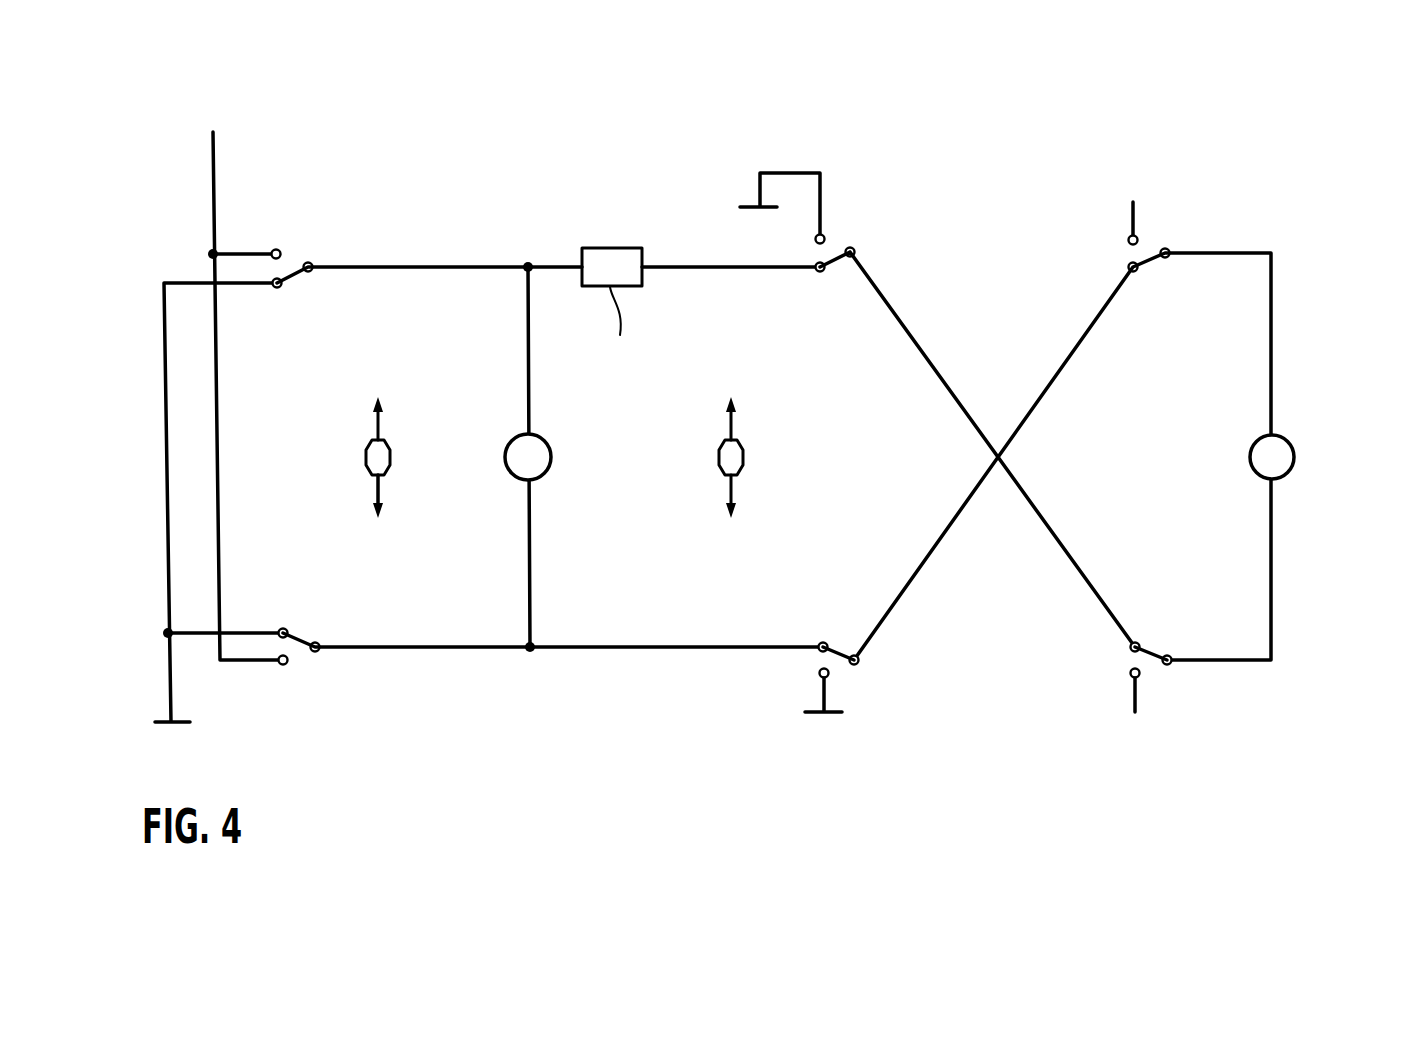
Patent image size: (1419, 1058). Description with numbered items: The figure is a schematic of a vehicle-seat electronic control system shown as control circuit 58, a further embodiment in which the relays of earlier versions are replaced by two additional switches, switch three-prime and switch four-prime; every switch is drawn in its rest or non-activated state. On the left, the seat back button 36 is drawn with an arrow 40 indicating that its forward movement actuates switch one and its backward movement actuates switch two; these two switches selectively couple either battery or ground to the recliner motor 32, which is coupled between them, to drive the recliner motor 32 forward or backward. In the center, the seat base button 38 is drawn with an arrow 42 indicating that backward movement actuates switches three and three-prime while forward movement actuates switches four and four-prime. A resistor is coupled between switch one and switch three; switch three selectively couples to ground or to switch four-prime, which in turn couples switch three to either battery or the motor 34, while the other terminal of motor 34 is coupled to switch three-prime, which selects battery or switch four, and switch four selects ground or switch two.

The control circuit 58 is at (1089, 99).
The recliner motor 32 is at (541, 478).
The motor 34 is at (1250, 456).
The seat back button 36 is at (390, 456).
The seat base button 38 is at (719, 458).
The arrow 40 is at (382, 425).
The arrow 42 is at (734, 423).